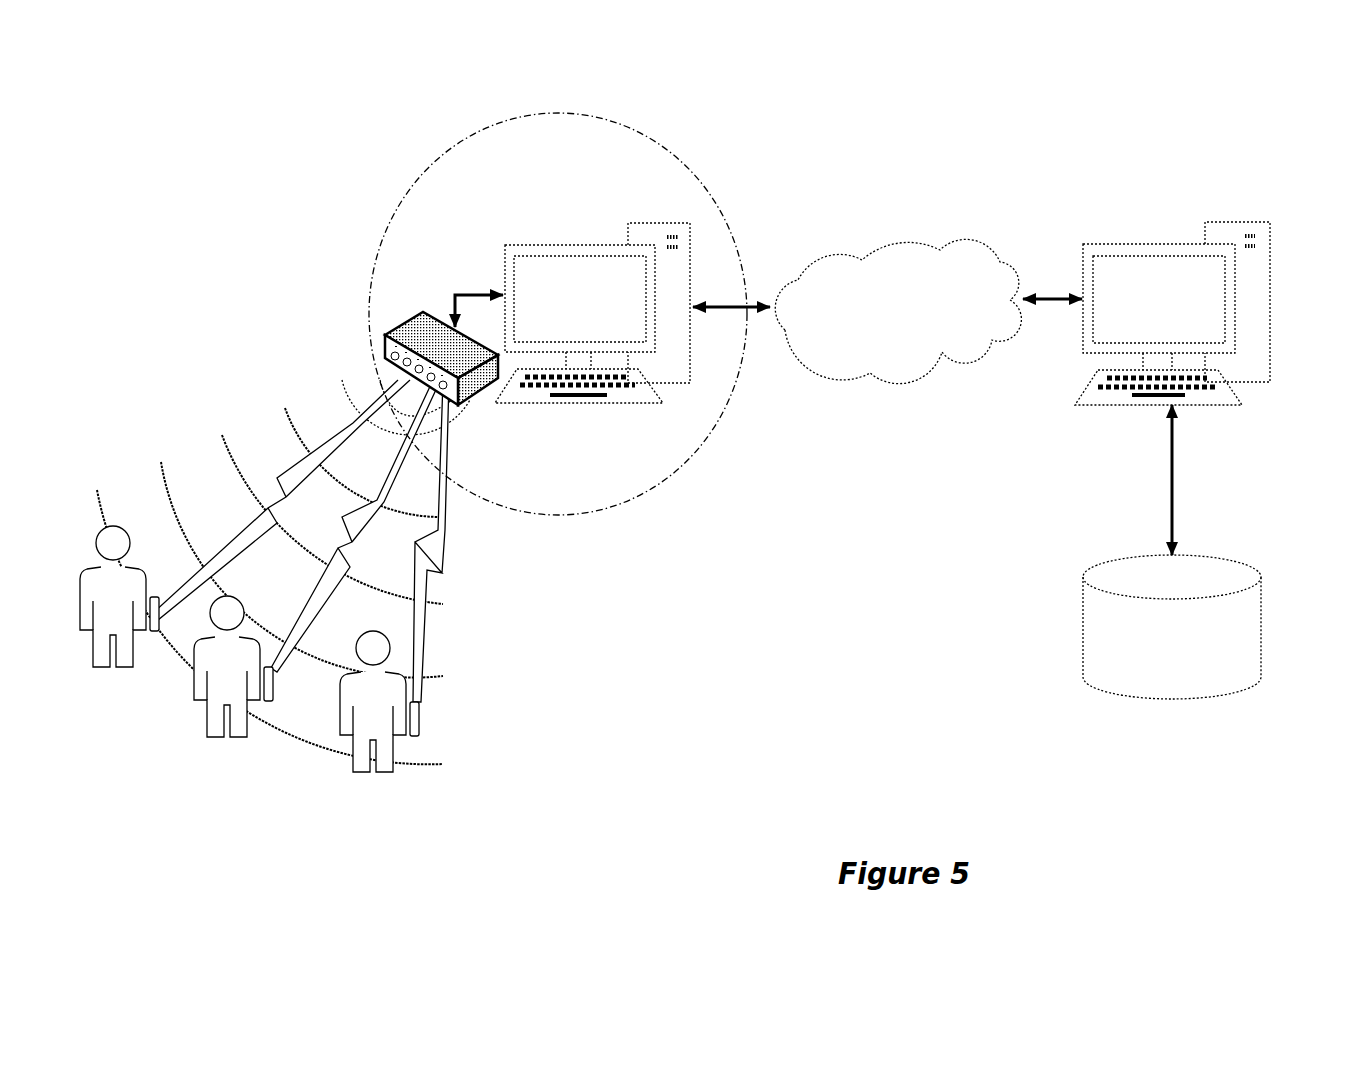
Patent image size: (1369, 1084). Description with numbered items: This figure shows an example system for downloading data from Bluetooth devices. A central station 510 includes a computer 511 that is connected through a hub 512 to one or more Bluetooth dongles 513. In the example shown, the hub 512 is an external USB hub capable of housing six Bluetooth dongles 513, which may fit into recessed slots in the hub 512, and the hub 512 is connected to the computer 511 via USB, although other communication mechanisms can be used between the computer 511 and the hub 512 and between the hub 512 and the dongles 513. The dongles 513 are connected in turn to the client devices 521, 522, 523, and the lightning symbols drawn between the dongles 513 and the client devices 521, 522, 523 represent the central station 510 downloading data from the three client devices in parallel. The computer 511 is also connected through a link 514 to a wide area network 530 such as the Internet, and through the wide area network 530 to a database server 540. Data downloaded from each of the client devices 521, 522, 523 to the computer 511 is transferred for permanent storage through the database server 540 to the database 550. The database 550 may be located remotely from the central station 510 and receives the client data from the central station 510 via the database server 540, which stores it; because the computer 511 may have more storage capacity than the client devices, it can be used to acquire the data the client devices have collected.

The central station 510 is at (425, 170).
The computer 511 is at (552, 240).
The hub 512 is at (423, 309).
The Bluetooth dongles 513 is at (458, 404).
The link 514 is at (720, 300).
The client device 521 is at (163, 637).
The client device 522 is at (264, 705).
The client device 523 is at (422, 728).
The wide area network 530 is at (878, 248).
The database server 540 is at (1253, 215).
The database 550 is at (1092, 565).